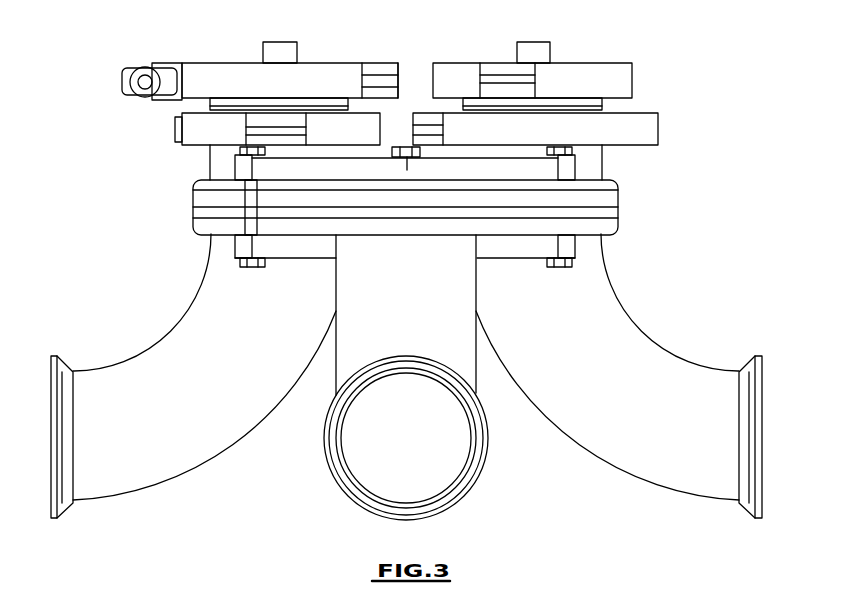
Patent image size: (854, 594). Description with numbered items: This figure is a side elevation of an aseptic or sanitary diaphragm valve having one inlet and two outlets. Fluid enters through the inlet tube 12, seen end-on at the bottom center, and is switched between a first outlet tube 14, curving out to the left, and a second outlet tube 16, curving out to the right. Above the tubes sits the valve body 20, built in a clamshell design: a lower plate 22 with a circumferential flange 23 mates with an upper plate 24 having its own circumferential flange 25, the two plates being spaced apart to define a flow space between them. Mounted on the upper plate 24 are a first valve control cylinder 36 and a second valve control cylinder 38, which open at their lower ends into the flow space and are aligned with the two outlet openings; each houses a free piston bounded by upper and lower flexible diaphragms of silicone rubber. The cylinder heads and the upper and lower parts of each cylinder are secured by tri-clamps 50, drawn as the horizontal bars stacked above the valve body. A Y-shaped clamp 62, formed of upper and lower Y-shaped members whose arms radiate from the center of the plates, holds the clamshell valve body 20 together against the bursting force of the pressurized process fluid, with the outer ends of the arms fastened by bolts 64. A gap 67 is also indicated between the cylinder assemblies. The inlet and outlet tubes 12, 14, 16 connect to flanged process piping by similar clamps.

The inlet tube 12 is at (330, 463).
The first outlet tube 14 is at (135, 498).
The second outlet tube 16 is at (683, 358).
The valve body 20 is at (732, 181).
The lower plate 22 is at (193, 220).
The circumferential flange 23 is at (618, 222).
The upper plate 24 is at (193, 197).
The circumferential flange 25 is at (633, 185).
The first valve control cylinder 36 is at (113, 137).
The second valve control cylinder 38 is at (652, 100).
The tri-clamp 50 is at (203, 63).
The Y-shaped clamp 62 is at (303, 247).
The bolt 64 is at (245, 200).
The gap 67 is at (381, 157).